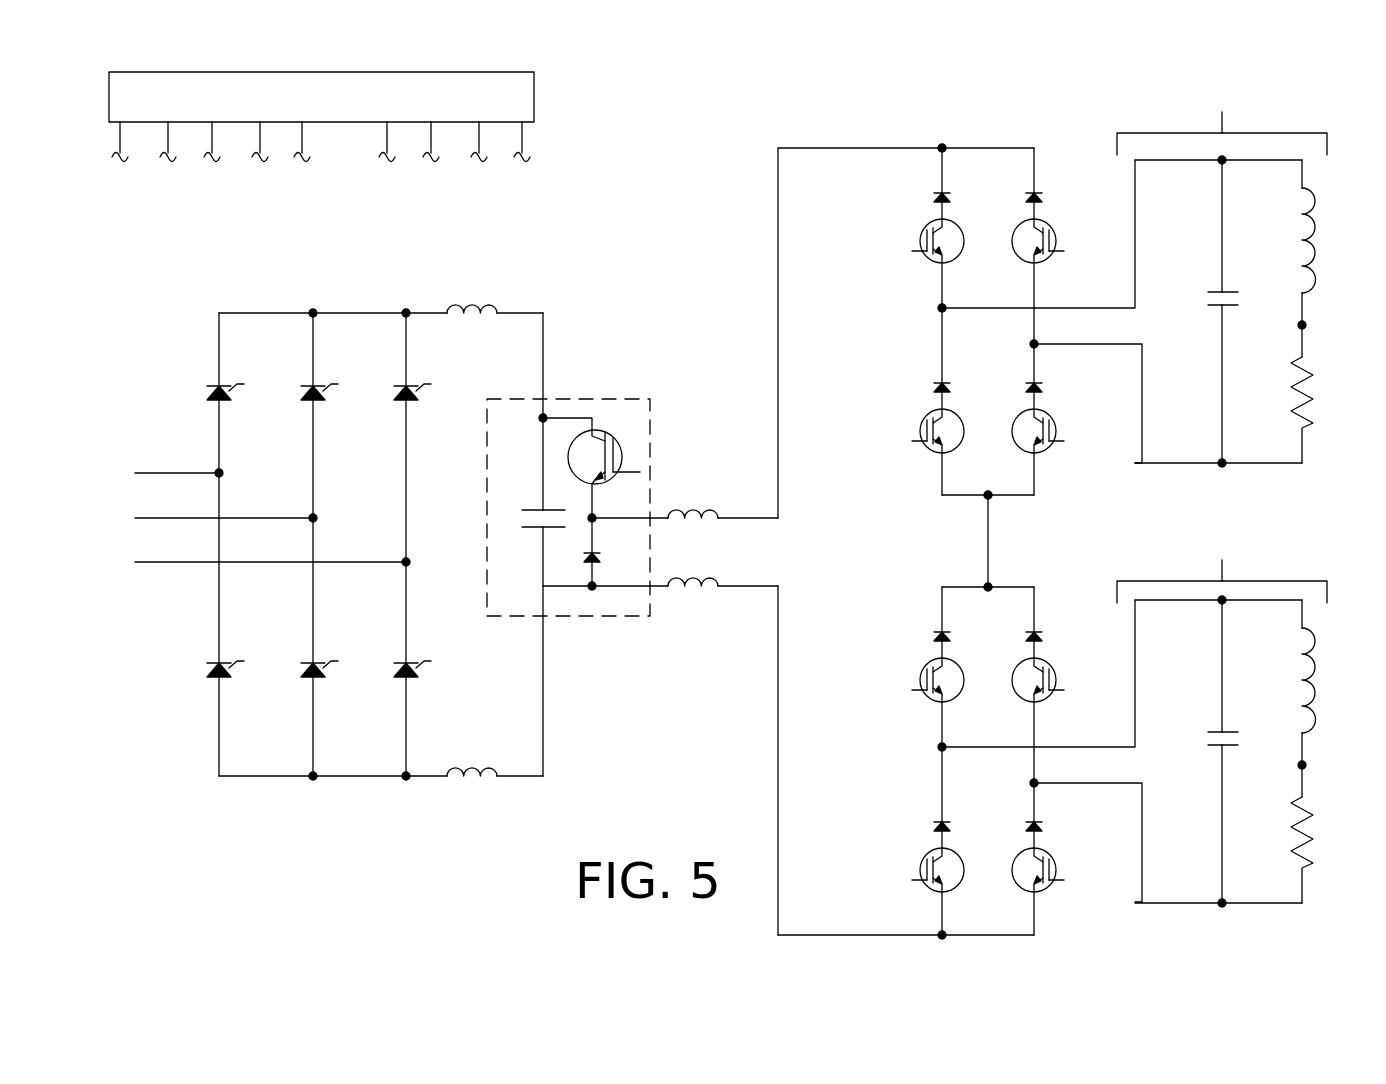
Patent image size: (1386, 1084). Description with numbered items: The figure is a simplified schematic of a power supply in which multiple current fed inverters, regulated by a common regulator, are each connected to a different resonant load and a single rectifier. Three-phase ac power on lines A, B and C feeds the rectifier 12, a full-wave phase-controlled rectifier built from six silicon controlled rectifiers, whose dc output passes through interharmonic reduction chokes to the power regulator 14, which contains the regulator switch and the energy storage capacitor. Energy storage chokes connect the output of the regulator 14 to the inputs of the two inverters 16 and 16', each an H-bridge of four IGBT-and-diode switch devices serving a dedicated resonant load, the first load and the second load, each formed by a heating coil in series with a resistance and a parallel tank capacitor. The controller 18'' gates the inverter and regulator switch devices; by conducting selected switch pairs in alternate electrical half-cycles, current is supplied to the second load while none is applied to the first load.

The controller 18'' is at (362, 135).
The rectifier 12 is at (310, 273).
The power regulator 14 is at (597, 399).
The current inverter 16 is at (1074, 335).
The current inverter 16' is at (1076, 735).